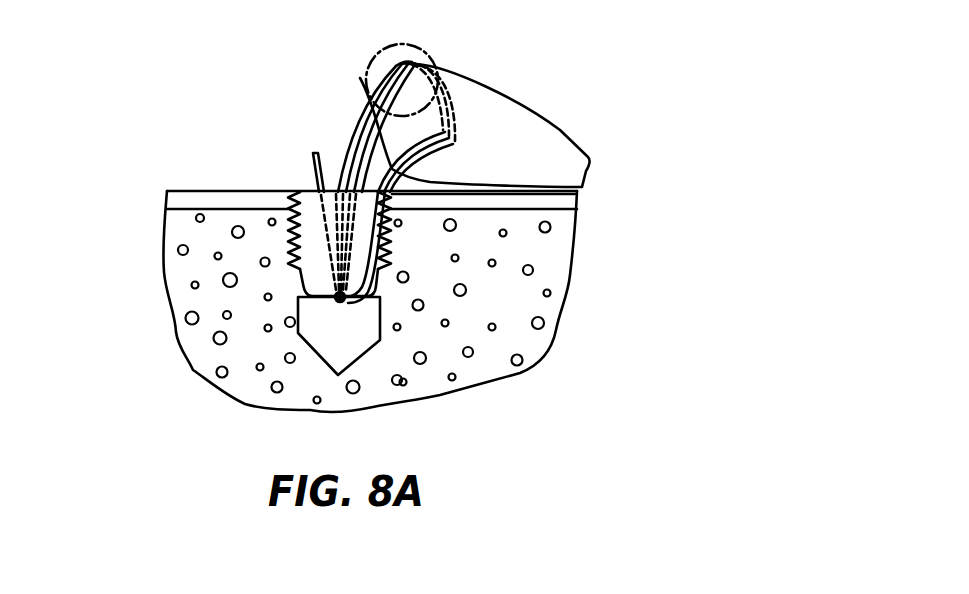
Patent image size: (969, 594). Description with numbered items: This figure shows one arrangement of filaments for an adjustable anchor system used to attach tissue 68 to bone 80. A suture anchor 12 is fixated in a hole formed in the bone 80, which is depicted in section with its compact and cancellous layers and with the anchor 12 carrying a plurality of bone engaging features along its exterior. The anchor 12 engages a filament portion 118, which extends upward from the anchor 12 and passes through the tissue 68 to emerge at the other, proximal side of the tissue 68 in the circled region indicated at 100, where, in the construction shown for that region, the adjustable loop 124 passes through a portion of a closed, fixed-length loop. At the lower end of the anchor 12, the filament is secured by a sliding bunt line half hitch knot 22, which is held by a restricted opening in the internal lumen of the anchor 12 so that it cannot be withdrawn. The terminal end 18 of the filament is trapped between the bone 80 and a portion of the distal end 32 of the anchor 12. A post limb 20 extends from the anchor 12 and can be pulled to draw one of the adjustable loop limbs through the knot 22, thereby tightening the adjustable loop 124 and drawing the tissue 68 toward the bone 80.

The suture anchor 12 is at (394, 289).
The terminal end 18 is at (297, 297).
The post limb 20 is at (310, 170).
The sliding bunt line half hitch knot 22 is at (347, 301).
The distal end 32 is at (380, 296).
The tissue 68 is at (527, 108).
The bone 80 is at (152, 271).
The circled region 100 is at (373, 64).
The filament portion 118 is at (378, 233).
The adjustable loop 124 is at (399, 239).